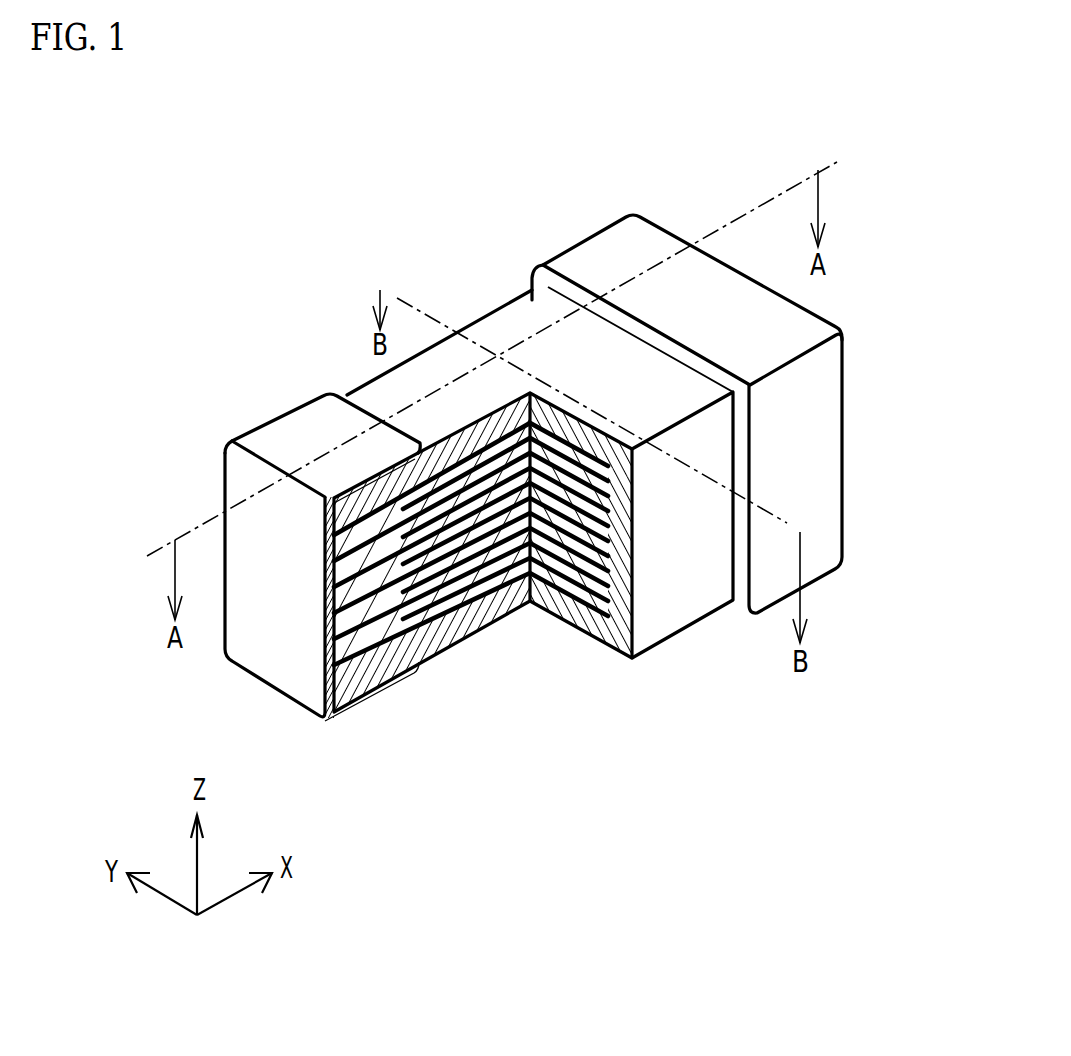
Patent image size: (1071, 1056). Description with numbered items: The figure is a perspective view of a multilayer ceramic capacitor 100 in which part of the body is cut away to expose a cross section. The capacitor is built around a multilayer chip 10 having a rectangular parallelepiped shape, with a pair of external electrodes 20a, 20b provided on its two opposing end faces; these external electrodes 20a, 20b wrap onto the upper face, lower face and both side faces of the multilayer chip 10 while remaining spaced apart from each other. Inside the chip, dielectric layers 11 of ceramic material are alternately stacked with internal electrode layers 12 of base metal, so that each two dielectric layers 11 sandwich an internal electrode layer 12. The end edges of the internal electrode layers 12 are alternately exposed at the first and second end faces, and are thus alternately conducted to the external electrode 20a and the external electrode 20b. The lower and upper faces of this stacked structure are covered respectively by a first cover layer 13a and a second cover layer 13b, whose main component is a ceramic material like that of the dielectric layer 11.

The multilayer ceramic capacitor 100 is at (950, 146).
The multilayer chip 10 is at (367, 383).
The dielectric layer 11 is at (468, 607).
The internal electrode layer 12 is at (517, 606).
The first cover layer 13a is at (368, 678).
The second cover layer 13b is at (500, 334).
The external electrode 20a is at (253, 428).
The external electrode 20b is at (588, 259).